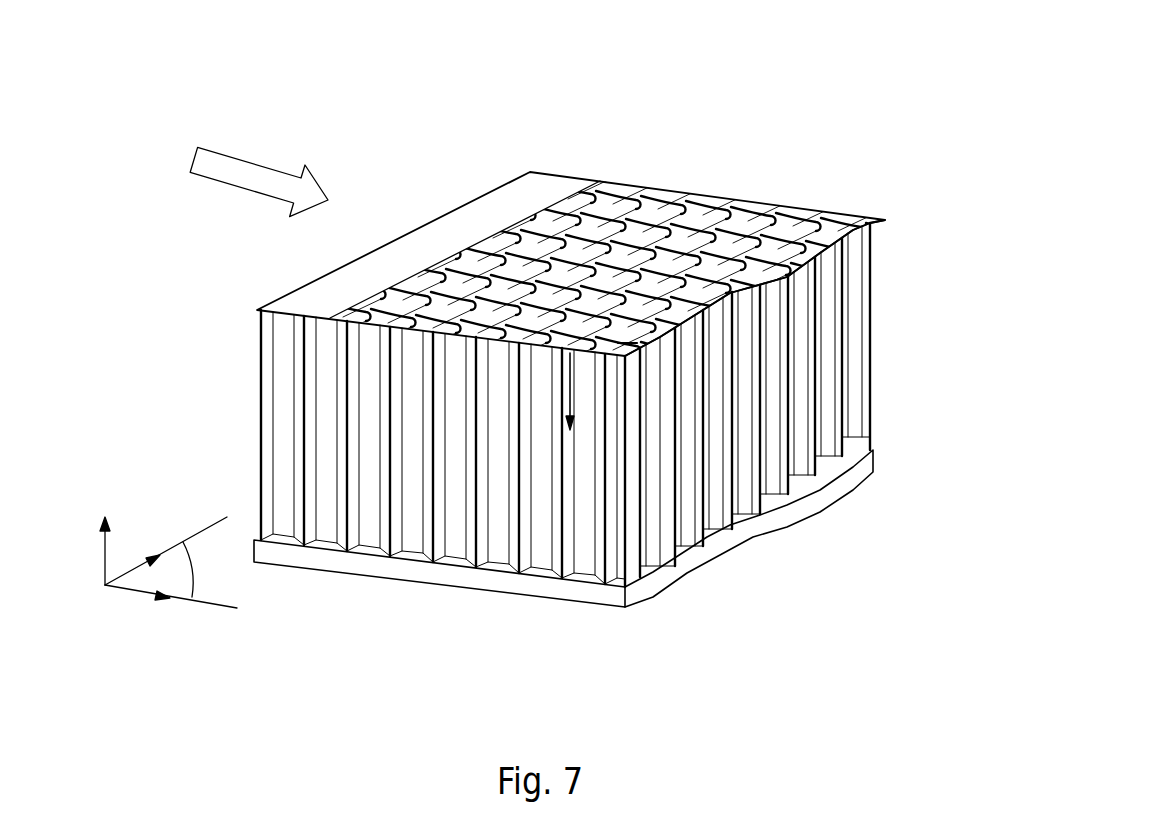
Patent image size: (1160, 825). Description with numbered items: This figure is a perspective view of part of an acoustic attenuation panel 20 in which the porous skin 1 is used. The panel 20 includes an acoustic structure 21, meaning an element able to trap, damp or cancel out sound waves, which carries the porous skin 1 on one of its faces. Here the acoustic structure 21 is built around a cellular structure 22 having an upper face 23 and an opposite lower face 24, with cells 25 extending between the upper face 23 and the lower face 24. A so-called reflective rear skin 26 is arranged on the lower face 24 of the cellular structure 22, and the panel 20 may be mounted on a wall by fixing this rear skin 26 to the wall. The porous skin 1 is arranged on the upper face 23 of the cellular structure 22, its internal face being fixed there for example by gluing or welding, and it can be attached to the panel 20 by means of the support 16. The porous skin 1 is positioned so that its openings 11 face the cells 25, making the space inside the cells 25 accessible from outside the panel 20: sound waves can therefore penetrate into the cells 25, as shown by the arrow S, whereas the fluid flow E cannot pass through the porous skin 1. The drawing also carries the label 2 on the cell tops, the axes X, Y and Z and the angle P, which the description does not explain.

The acoustic attenuation panel 20 is at (895, 78).
The porous skin 1 is at (807, 185).
The cells 2 is at (637, 227).
The support 16 is at (480, 218).
The upper face 23 is at (850, 225).
The acoustic structure 21 is at (887, 253).
The cellular structure 22 is at (880, 343).
The lower face 24 is at (828, 473).
The cells 25 is at (582, 520).
The reflective rear skin 26 is at (487, 578).
The openings 11 is at (563, 367).
The arrow S is at (598, 336).
The fluid flow E is at (246, 161).
The angle P is at (201, 569).
The X axis X is at (130, 570).
The Y axis Y is at (142, 593).
The Z axis Z is at (103, 567).